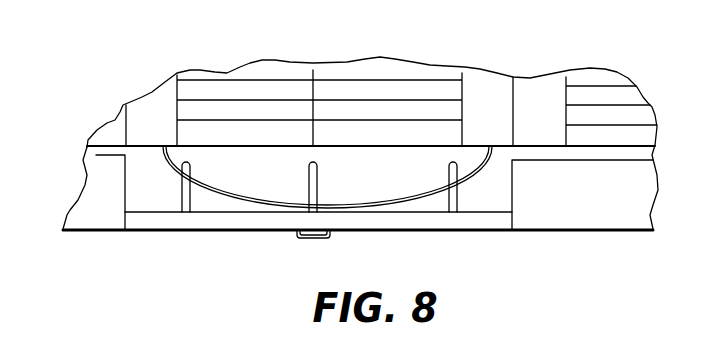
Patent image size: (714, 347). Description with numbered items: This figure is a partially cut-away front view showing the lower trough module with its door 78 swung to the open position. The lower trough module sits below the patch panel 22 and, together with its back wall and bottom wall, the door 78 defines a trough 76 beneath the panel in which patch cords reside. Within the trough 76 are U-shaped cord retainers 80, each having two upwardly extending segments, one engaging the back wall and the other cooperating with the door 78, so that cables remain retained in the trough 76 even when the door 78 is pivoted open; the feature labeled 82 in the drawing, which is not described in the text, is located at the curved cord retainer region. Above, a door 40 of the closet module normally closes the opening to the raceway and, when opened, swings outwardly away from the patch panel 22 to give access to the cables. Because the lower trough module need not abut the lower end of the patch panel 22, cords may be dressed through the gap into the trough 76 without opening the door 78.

The patch panel 22 is at (232, 98).
The door 40 is at (540, 92).
The trough 76 is at (398, 180).
The door 78 is at (187, 231).
The cord retainer 80 is at (313, 173).
The outer surface of flexible member 82 is at (490, 170).